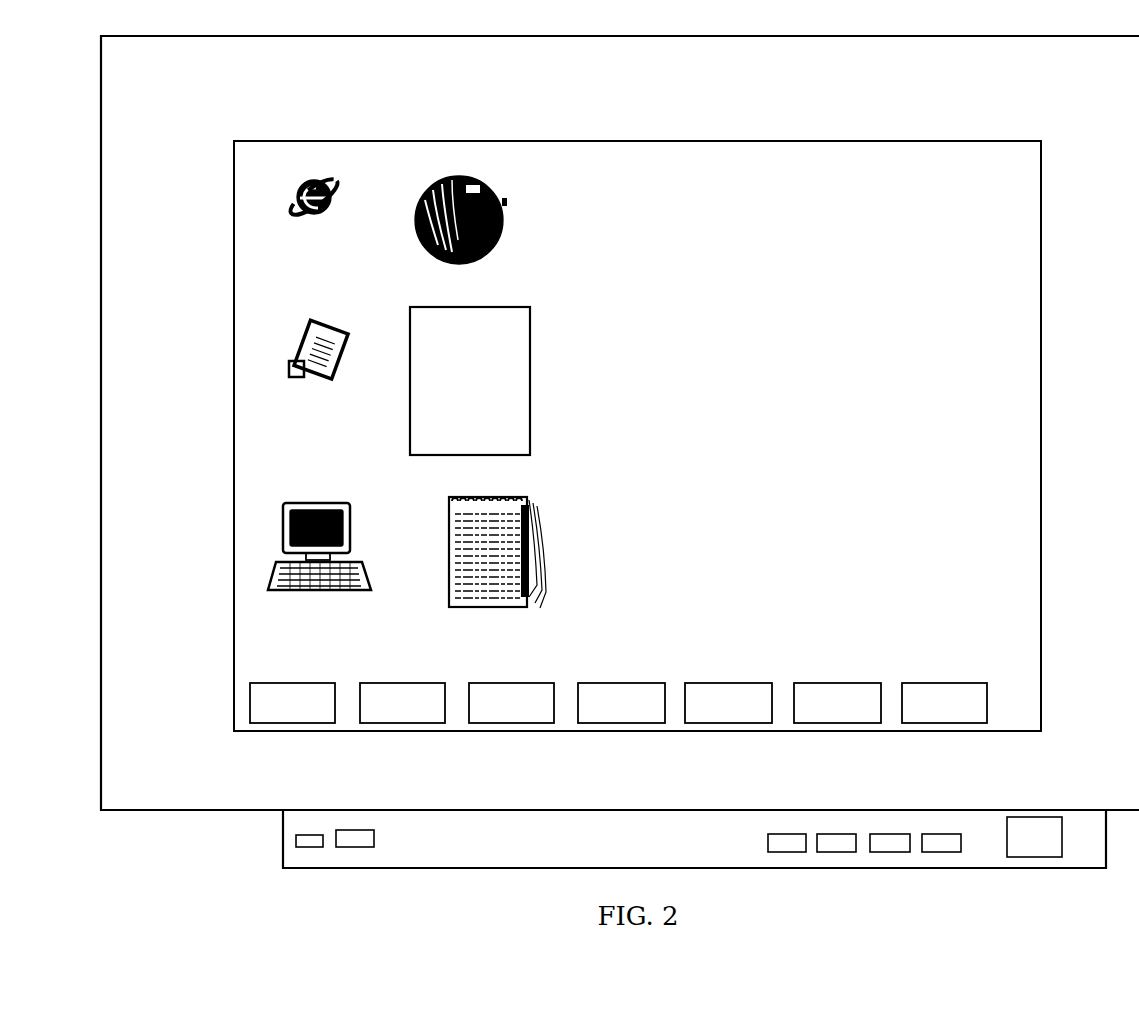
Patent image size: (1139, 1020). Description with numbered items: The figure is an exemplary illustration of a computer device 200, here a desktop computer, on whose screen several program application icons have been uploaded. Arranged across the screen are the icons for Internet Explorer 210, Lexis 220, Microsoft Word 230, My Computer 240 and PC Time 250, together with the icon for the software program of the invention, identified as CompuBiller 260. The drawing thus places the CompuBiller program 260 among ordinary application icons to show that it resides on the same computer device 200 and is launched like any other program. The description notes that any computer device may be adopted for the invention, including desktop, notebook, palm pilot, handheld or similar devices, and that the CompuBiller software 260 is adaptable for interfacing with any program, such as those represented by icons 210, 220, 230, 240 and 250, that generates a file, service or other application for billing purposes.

The computer device 200 is at (100, 646).
The Internet Explorer icon 210 is at (346, 179).
The Lexis icon 220 is at (499, 190).
The Microsoft Word icon 230 is at (328, 326).
The My Computer icon 240 is at (318, 503).
The PC Time icon 250 is at (540, 524).
The CompuBiller software program icon 260 is at (532, 358).